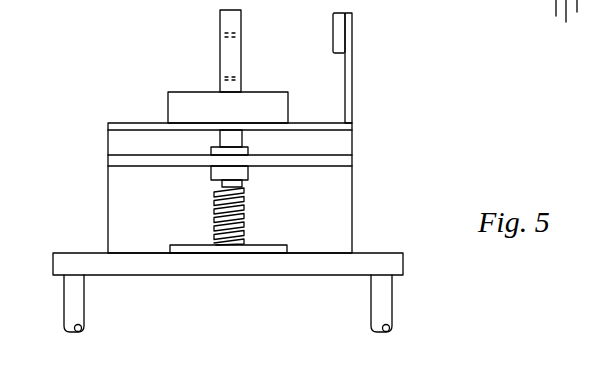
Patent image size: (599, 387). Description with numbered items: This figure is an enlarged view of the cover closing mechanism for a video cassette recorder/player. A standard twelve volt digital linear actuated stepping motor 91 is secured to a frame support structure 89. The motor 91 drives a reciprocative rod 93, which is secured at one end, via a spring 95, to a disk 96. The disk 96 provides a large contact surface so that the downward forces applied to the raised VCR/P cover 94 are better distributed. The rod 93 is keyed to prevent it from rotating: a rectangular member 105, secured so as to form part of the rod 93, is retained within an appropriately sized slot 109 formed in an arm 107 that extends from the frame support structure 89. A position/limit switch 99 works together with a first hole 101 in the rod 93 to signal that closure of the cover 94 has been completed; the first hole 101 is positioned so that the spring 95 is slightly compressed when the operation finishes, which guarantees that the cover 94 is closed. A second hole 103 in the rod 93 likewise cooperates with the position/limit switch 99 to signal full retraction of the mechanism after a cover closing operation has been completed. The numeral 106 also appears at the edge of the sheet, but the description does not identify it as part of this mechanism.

The frame support structure 89 is at (352, 128).
The stepping motor 91 is at (175, 107).
The reciprocative rod 93 is at (225, 57).
The VCR/P cover 94 is at (388, 266).
The spring 95 is at (214, 217).
The disk 96 is at (170, 248).
The position/limit switch 99 is at (347, 33).
The first hole 101 is at (221, 31).
The second hole 103 is at (221, 80).
The rectangular member 105 is at (247, 177).
The arm 107 is at (348, 165).
The slot 109 is at (247, 148).
The element of adjacent figure 106 is at (530, 11).